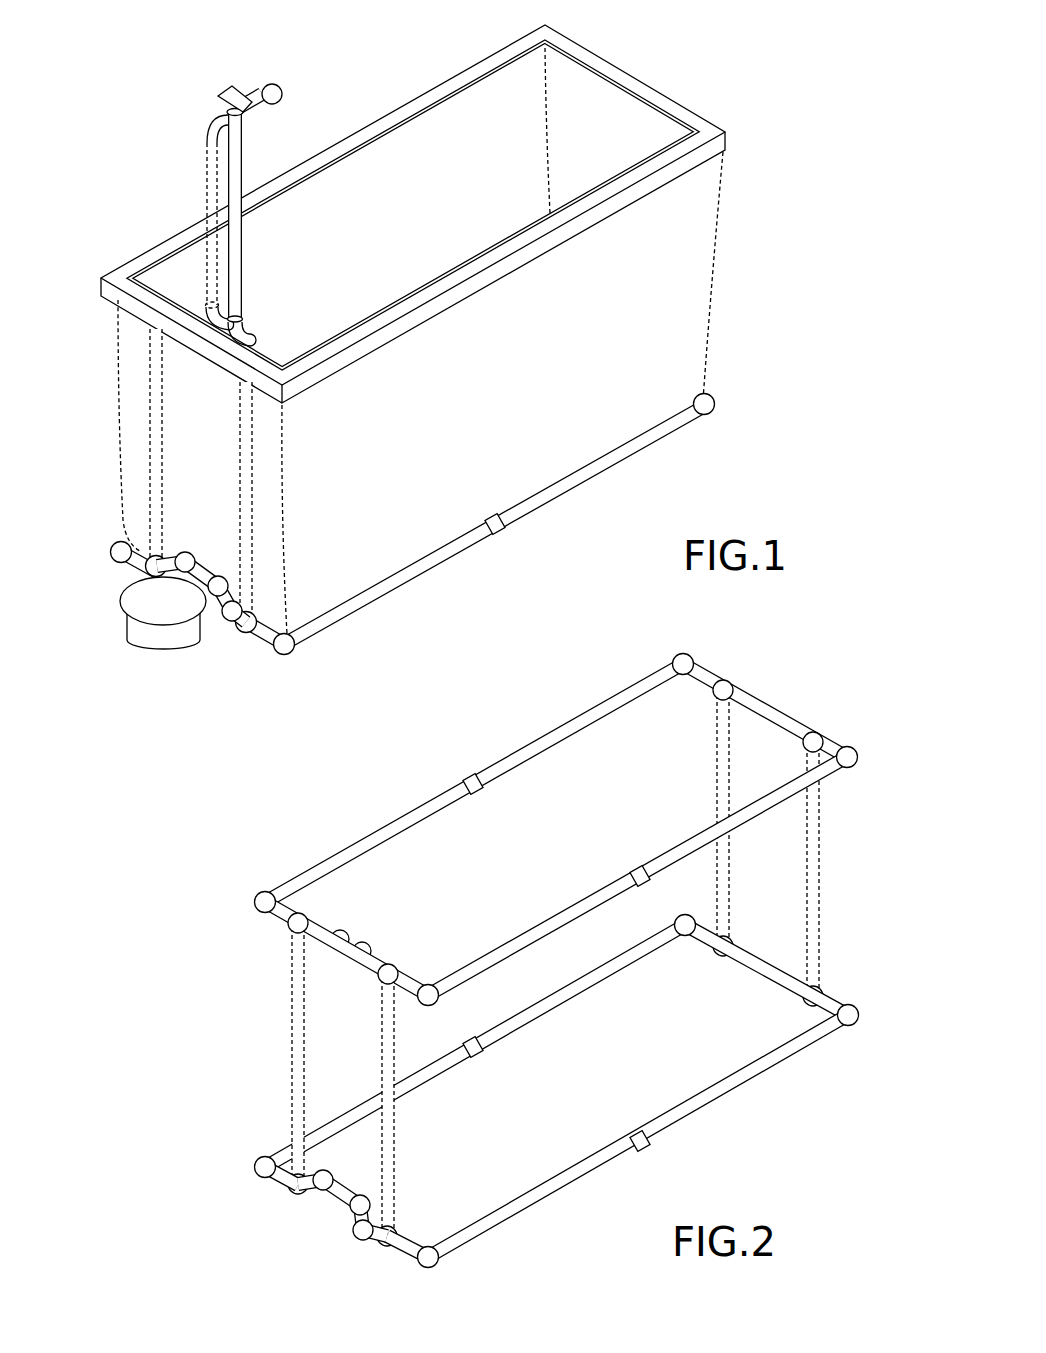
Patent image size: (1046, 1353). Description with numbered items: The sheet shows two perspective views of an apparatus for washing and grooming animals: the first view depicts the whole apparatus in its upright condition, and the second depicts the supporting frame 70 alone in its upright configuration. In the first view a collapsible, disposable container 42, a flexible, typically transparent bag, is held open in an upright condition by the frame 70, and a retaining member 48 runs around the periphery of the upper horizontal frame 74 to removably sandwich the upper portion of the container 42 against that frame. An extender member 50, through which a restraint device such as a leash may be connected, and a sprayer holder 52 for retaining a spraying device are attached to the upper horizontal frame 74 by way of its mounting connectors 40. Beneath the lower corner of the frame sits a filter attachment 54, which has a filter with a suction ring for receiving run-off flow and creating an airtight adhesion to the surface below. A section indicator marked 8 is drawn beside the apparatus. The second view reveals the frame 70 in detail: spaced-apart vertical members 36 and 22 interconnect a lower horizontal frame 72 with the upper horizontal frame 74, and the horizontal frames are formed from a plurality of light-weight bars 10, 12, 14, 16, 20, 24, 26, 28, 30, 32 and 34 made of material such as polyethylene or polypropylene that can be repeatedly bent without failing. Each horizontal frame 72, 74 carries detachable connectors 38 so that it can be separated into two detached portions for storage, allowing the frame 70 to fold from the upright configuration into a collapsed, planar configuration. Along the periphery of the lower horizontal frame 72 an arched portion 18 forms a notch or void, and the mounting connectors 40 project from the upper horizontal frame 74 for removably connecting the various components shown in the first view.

In FIG. 1, the section line indicator 8 is at (677, 43).
In FIG. 2, the bar 10 is at (540, 961).
In FIG. 2, the bar 12 is at (637, 876).
In FIG. 2, the bar 14 is at (475, 1046).
In FIG. 1, the bar 16 is at (412, 521).
In FIG. 2, the bar 16 is at (638, 1136).
In FIG. 1, the arched portion 18 is at (200, 570).
In FIG. 2, the arched portion 18 is at (340, 1192).
In FIG. 2, the bar 20 is at (273, 912).
In FIG. 1, the vertical member 22 is at (152, 486).
In FIG. 2, the vertical member 22 is at (300, 1077).
In FIG. 2, the bar 24 is at (580, 720).
In FIG. 2, the bar 26 is at (695, 847).
In FIG. 2, the bar 28 is at (533, 1013).
In FIG. 1, the bar 30 is at (630, 447).
In FIG. 2, the bar 30 is at (705, 1103).
In FIG. 2, the bar 32 is at (767, 708).
In FIG. 2, the bar 34 is at (747, 957).
In FIG. 2, the vertical member 36 is at (722, 758).
In FIG. 1, the detachable connector 38 is at (502, 529).
In FIG. 2, the detachable connector 38 is at (482, 787).
In FIG. 2, the mounting connector 40 is at (342, 935).
In FIG. 1, the disposable container 42 is at (702, 209).
In FIG. 1, the retaining member 48 is at (708, 130).
In FIG. 1, the extender member 50 is at (208, 178).
In FIG. 1, the sprayer holder 52 is at (237, 151).
In FIG. 1, the filter attachment 54 is at (158, 642).
In FIG. 2, the frame 70 is at (877, 636).
In FIG. 2, the lower horizontal frame 72 is at (767, 1075).
In FIG. 2, the upper horizontal frame 74 is at (323, 862).